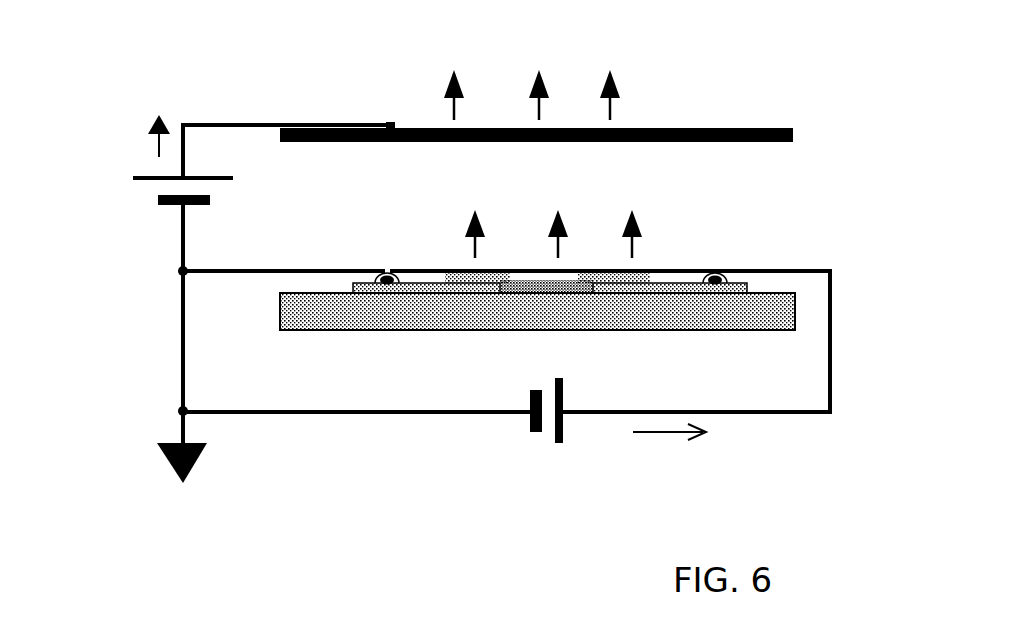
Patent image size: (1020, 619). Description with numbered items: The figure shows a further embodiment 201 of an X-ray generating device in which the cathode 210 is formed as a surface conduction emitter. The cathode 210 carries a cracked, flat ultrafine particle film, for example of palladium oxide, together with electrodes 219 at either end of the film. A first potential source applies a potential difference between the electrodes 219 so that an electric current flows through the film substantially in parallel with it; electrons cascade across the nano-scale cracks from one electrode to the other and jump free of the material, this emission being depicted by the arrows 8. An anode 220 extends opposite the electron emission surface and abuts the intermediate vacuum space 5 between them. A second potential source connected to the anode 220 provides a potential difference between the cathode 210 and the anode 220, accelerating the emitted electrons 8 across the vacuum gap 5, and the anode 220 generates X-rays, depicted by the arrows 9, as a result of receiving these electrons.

The embodiment 201 is at (205, 56).
The anode 220 is at (657, 127).
The arrows depicting X-rays 9 is at (548, 78).
The vacuum space 5 is at (567, 179).
The cathode 210 is at (350, 250).
The electrodes 219 is at (385, 275).
The arrows depicting electrons 8 is at (567, 220).